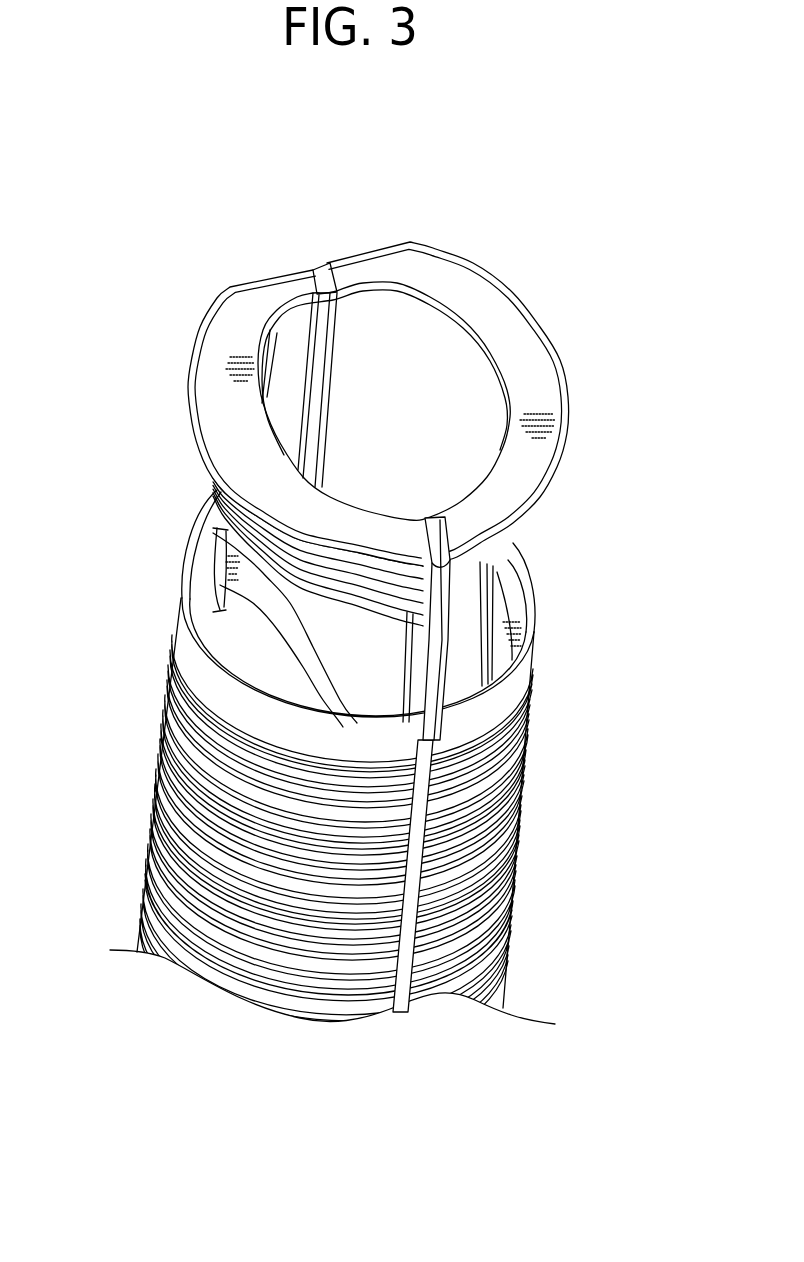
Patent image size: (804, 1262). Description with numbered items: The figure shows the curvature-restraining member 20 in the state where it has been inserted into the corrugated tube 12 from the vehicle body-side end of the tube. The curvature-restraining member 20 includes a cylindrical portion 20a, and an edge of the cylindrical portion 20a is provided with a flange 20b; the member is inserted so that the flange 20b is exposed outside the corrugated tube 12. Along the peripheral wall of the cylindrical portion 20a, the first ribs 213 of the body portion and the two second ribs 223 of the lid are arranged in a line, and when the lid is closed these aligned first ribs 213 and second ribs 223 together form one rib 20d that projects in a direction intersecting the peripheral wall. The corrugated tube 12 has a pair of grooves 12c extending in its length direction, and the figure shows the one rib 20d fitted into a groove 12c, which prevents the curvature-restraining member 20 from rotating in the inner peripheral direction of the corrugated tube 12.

The corrugated tube 12 is at (153, 802).
The groove 12c is at (400, 727).
The curvature-restraining member 20 is at (480, 250).
The cylindrical portion 20a is at (477, 628).
The flange 20b is at (560, 501).
The rib 20d is at (73, 503).
The first ribs 213 is at (213, 533).
The second ribs 223 is at (220, 585).